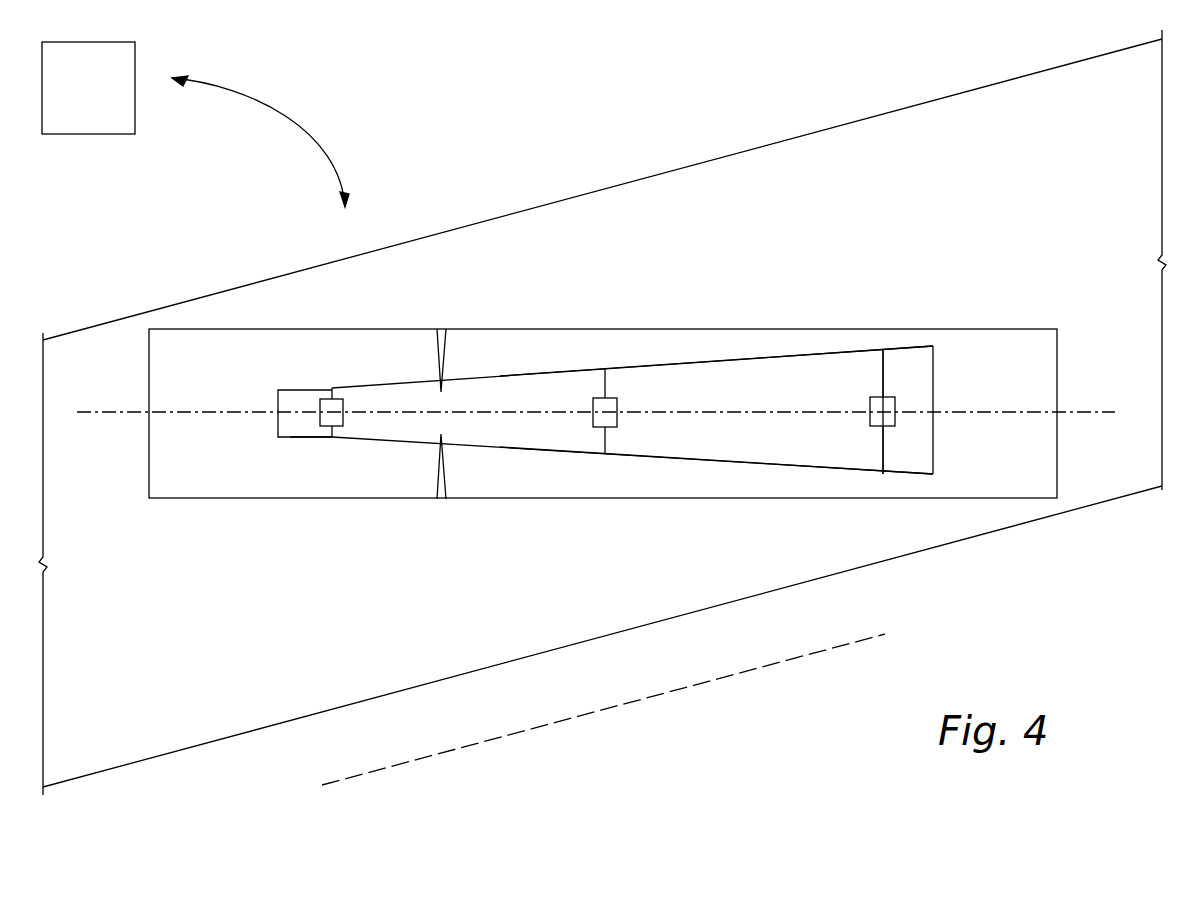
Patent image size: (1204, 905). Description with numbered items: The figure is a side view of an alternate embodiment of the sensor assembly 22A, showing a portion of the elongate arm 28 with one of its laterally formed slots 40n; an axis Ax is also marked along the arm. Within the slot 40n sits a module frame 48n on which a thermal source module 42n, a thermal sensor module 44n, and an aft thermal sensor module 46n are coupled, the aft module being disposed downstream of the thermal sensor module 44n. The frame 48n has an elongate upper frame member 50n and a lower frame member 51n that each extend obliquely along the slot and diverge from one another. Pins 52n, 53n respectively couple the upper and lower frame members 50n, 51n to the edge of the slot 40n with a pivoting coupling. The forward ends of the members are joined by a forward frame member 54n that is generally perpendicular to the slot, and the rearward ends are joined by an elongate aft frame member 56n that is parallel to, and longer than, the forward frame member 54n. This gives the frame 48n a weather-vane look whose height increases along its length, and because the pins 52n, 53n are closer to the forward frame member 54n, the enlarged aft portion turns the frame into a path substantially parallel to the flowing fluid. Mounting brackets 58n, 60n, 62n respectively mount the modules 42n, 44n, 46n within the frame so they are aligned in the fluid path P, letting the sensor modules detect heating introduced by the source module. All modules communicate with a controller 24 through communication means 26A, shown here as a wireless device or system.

The sensor assembly 22A is at (990, 242).
The controller 24 is at (87, 134).
The communication means 26A is at (272, 117).
The elongate arm 28 is at (788, 139).
The blade axis Ax is at (567, 722).
The slot 40n is at (730, 328).
The thermal source module 42n is at (324, 406).
The thermal sensor module 44n is at (606, 409).
The aft thermal sensor module 46n is at (872, 405).
The module frame 48n is at (546, 459).
The upper frame member 50n is at (700, 362).
The lower frame member 51n is at (697, 465).
The pin 52n is at (438, 358).
The pin 53n is at (438, 466).
The forward frame member 54n is at (278, 397).
The aft frame member 56n is at (933, 382).
The mounting bracket 58n is at (313, 440).
The mounting bracket 60n is at (607, 441).
The mounting bracket 62n is at (882, 448).
The path P is at (553, 412).